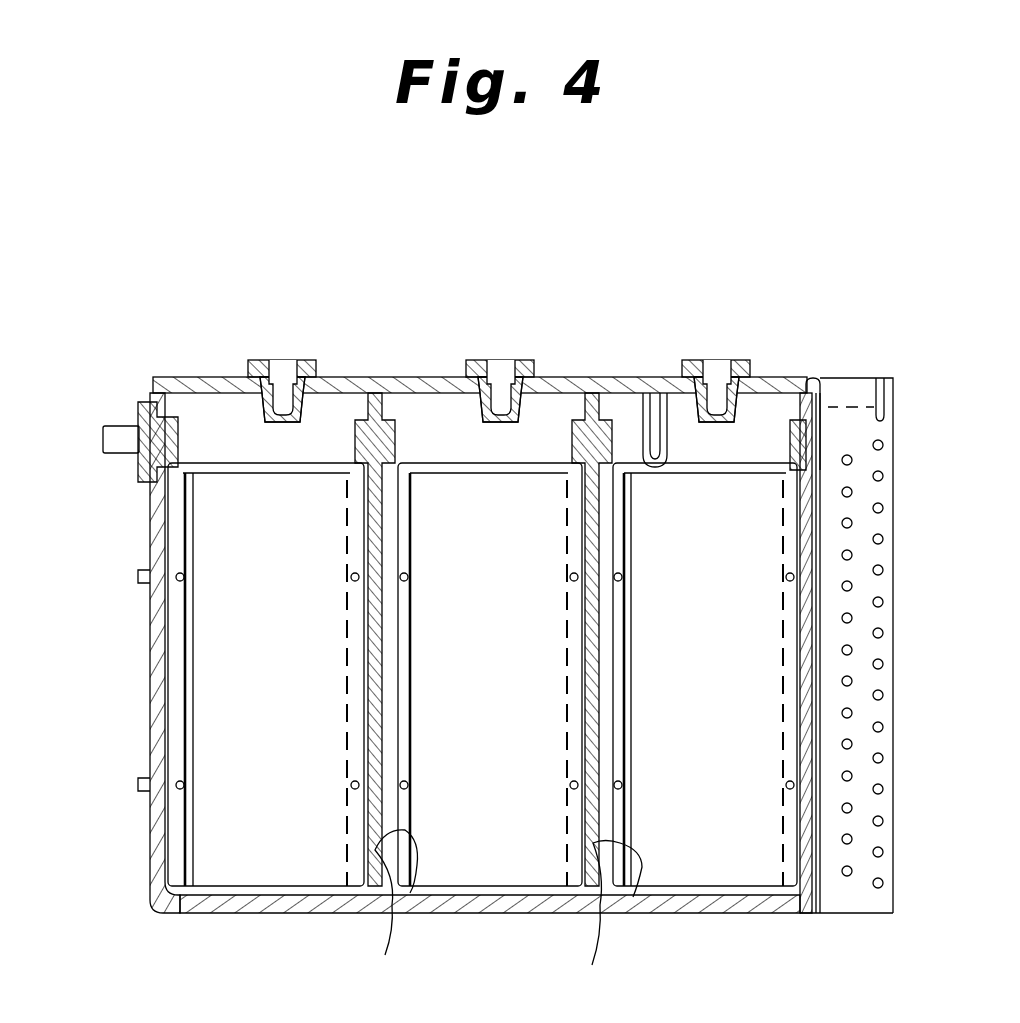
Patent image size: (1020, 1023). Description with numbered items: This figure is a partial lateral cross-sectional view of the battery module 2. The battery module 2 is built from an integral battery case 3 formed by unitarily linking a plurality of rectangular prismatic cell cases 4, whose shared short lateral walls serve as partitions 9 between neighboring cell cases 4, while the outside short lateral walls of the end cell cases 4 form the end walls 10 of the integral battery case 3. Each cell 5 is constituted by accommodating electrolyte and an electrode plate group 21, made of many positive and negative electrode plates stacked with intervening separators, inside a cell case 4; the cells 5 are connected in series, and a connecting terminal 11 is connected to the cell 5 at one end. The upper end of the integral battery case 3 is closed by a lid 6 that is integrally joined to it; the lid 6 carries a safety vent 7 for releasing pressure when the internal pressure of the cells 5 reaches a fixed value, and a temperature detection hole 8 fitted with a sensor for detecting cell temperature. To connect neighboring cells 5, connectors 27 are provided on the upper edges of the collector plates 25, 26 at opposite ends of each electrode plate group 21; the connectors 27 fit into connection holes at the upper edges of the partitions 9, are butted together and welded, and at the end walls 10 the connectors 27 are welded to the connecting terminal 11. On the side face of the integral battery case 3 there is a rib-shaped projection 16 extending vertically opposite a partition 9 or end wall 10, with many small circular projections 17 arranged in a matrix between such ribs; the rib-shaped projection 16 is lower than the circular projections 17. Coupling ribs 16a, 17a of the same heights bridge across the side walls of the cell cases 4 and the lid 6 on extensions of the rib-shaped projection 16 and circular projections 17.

The battery module 2 is at (114, 666).
The integral battery case 3 is at (144, 752).
The cell case 4 is at (273, 903).
The cell 5 is at (314, 918).
The lid 6 is at (198, 383).
The safety vent 7 is at (298, 363).
The temperature detection hole 8 is at (651, 395).
The partition 9 is at (507, 917).
The end wall 10 is at (158, 828).
The connecting terminal 11 is at (122, 434).
The rib-shaped projection 16 is at (812, 885).
The coupling rib 16a is at (814, 400).
The circular projection 17 is at (877, 895).
The coupling rib 17a is at (880, 380).
The electrode plate group 21 is at (250, 683).
The collector plate 25 is at (170, 714).
The collector plate 26 is at (362, 728).
The connector 27 is at (188, 435).